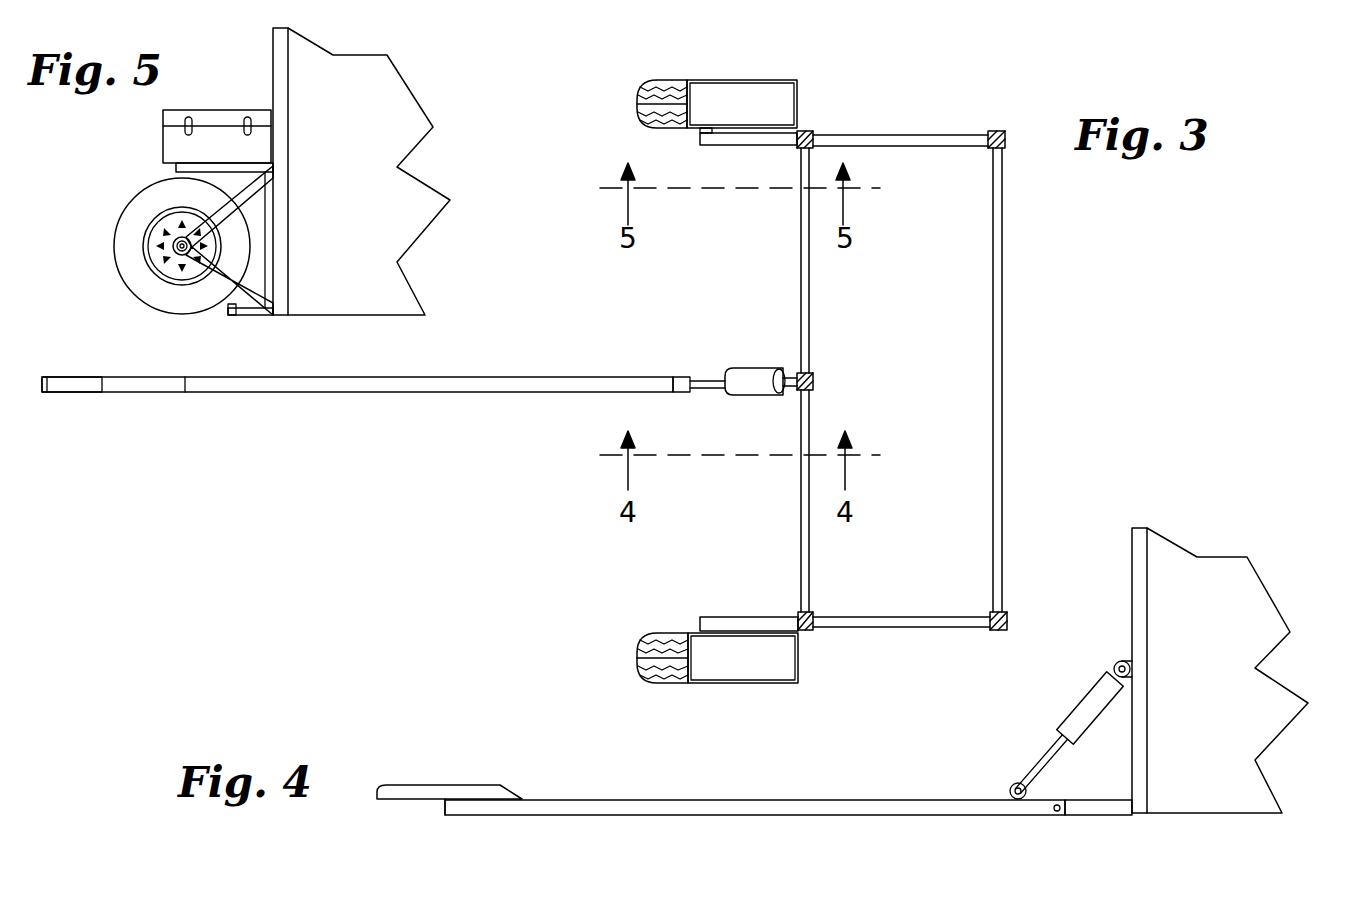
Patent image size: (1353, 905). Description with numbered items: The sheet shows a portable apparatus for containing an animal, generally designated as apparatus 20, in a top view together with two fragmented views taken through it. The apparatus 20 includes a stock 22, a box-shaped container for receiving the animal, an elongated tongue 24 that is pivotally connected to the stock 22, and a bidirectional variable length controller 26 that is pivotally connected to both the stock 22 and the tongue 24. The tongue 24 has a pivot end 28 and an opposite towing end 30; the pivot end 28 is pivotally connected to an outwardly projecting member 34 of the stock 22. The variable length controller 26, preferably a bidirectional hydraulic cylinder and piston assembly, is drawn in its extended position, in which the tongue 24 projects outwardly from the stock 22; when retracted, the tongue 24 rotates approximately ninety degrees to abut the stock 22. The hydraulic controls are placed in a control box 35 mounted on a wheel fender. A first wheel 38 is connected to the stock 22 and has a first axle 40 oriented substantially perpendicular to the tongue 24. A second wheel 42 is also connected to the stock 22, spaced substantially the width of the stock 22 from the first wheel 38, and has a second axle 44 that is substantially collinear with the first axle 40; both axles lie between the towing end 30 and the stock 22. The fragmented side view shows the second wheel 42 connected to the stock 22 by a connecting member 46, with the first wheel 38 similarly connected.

In FIG. 3, the portable apparatus for containing an animal 20 is at (931, 328).
In FIG. 4, the portable apparatus for containing an animal 20 is at (1231, 632).
In FIG. 5, the portable apparatus for containing an animal 20 is at (383, 159).
In FIG. 3, the stock 22 is at (1003, 405).
In FIG. 4, the stock 22 is at (1290, 616).
In FIG. 5, the stock 22 is at (450, 201).
In FIG. 3, the elongated tongue 24 is at (425, 392).
In FIG. 4, the elongated tongue 24 is at (727, 800).
In FIG. 3, the bidirectional variable length controller 26 is at (723, 335).
In FIG. 4, the bidirectional variable length controller 26 is at (1058, 705).
In FIG. 4, the pivot end 28 is at (1043, 810).
In FIG. 3, the towing end 30 is at (45, 393).
In FIG. 4, the towing end 30 is at (432, 785).
In FIG. 4, the outwardly projecting member 34 is at (1100, 800).
In FIG. 3, the control box 35 is at (735, 657).
In FIG. 3, the first wheel 38 is at (652, 684).
In FIG. 3, the first axle 40 is at (700, 631).
In FIG. 3, the second wheel 42 is at (641, 87).
In FIG. 5, the second wheel 42 is at (120, 216).
In FIG. 3, the second axle 44 is at (700, 131).
In FIG. 5, the second axle 44 is at (157, 273).
In FIG. 3, the connecting member 46 is at (753, 146).
In FIG. 5, the connecting member 46 is at (237, 312).